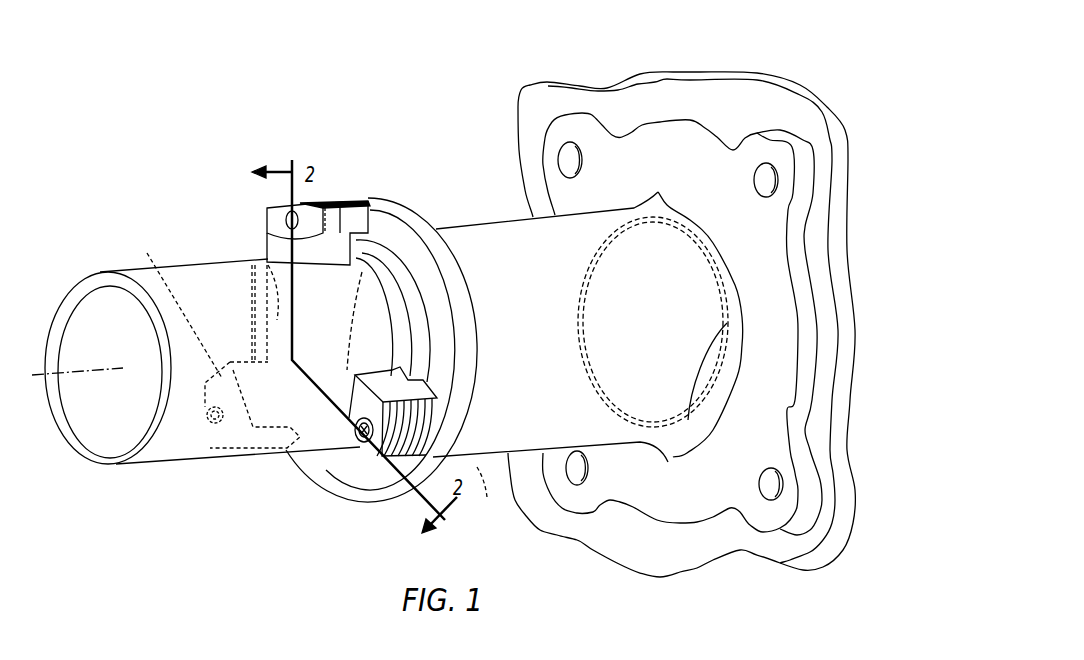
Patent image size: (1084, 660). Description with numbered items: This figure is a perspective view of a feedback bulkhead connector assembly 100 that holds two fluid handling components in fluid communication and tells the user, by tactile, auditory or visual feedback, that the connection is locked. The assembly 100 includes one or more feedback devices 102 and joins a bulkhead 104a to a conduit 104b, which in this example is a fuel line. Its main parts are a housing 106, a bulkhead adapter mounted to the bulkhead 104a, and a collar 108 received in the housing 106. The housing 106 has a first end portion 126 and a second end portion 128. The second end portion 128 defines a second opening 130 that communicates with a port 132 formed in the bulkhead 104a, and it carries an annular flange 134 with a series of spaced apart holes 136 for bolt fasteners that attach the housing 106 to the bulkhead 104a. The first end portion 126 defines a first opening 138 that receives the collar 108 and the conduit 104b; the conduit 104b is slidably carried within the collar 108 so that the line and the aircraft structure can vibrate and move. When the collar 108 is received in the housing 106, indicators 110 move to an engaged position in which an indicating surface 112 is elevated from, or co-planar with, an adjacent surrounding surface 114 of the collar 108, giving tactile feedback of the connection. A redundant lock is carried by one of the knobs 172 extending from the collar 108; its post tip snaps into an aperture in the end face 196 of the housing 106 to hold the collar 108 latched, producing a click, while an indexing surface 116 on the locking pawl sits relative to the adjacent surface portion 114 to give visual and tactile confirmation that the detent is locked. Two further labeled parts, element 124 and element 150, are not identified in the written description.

The feedback bulkhead connector assembly 100 is at (129, 185).
The feedback device 102 is at (256, 219).
The bulkhead 104a is at (826, 107).
The conduit 104b is at (161, 464).
The housing 106 is at (495, 210).
The collar 108 is at (393, 244).
The indicator 110 is at (202, 422).
The indicating surface 112 is at (198, 428).
The adjacent surrounding surface 114 is at (280, 250).
The indexing surface 116 is at (273, 213).
The flange front face 124 is at (620, 563).
The first end portion 126 is at (367, 197).
The second end portion 128 is at (625, 212).
The second opening 130 is at (628, 428).
The port 132 is at (688, 420).
The annular flange 134 is at (718, 137).
The holes 136 is at (571, 160).
The first opening 138 is at (408, 292).
The pipe 150 is at (80, 370).
The knob 172 is at (316, 380).
The end face 196 is at (433, 323).